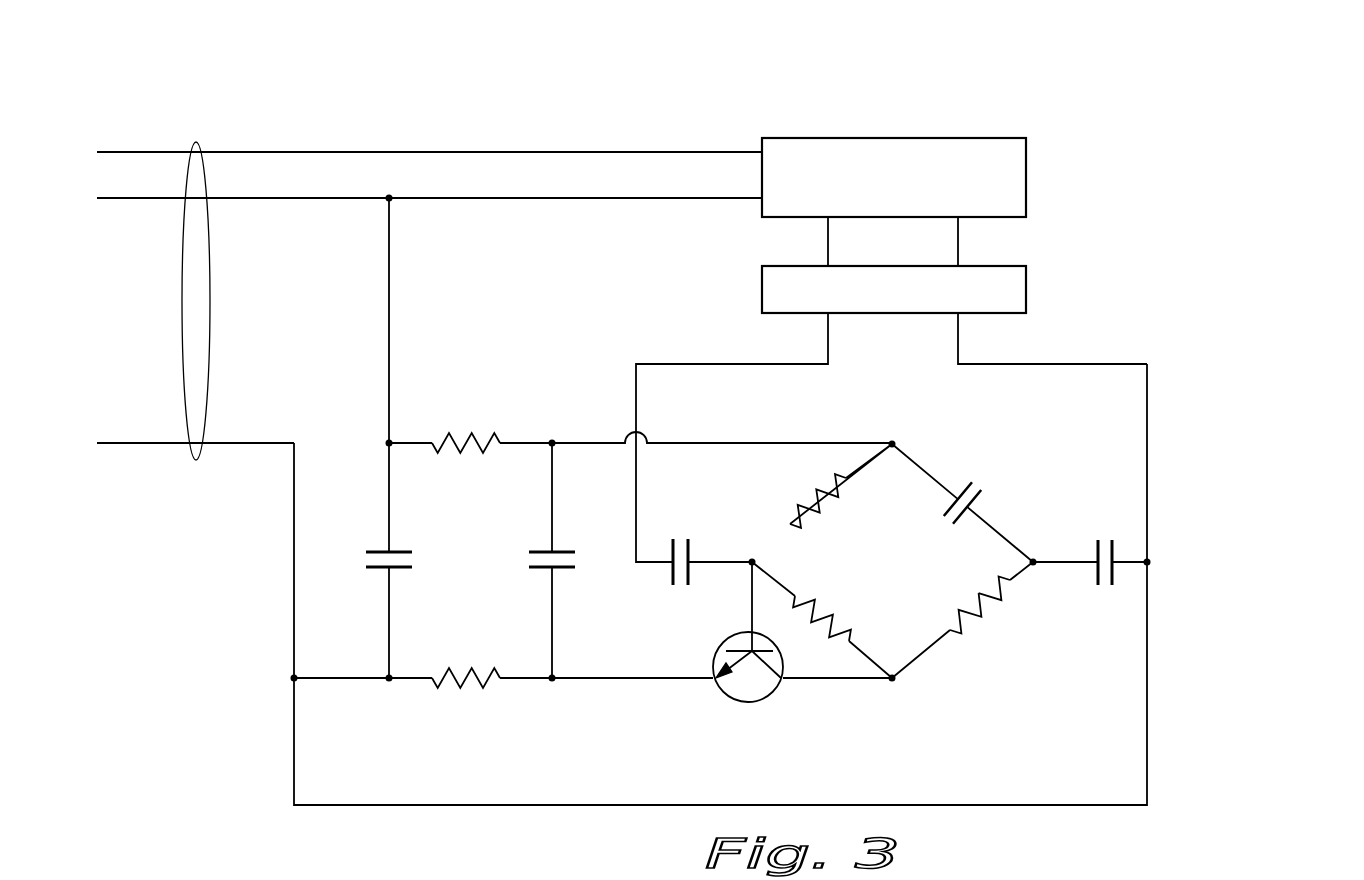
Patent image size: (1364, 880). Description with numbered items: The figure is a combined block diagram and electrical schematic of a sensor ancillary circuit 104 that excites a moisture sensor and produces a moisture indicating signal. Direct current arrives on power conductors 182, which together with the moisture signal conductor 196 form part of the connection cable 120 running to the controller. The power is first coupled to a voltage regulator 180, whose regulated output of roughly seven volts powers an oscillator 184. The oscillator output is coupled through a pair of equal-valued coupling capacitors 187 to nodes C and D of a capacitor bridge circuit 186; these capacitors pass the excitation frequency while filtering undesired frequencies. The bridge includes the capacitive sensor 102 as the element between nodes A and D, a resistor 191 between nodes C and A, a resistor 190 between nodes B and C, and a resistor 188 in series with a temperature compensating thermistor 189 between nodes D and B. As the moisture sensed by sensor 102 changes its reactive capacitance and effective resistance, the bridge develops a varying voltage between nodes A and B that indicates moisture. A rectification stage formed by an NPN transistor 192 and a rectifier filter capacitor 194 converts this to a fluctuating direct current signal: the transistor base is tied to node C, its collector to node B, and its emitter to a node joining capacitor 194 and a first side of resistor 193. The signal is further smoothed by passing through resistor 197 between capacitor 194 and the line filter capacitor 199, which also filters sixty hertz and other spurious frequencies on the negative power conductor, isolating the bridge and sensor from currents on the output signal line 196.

The sensor 102 is at (975, 488).
The sensor ancillary circuit 104 is at (1224, 136).
The connection cable 120 is at (196, 142).
The voltage regulator 180 is at (1028, 180).
The conductors 182 is at (500, 198).
The oscillator 184 is at (1028, 290).
The capacitor bridge circuit 186 is at (974, 734).
The coupling capacitors 187 is at (690, 545).
The resistor 188 is at (960, 642).
The thermistor 189 is at (1005, 590).
The resistor 190 is at (810, 612).
The resistor 191 is at (800, 510).
The NPN transistor 192 is at (748, 705).
The resistor 193 is at (475, 682).
The rectifier filter capacitor 194 is at (563, 572).
The moisture signal conductor 196 is at (150, 443).
The resistor 197 is at (480, 435).
The line filter capacitor 199 is at (405, 548).